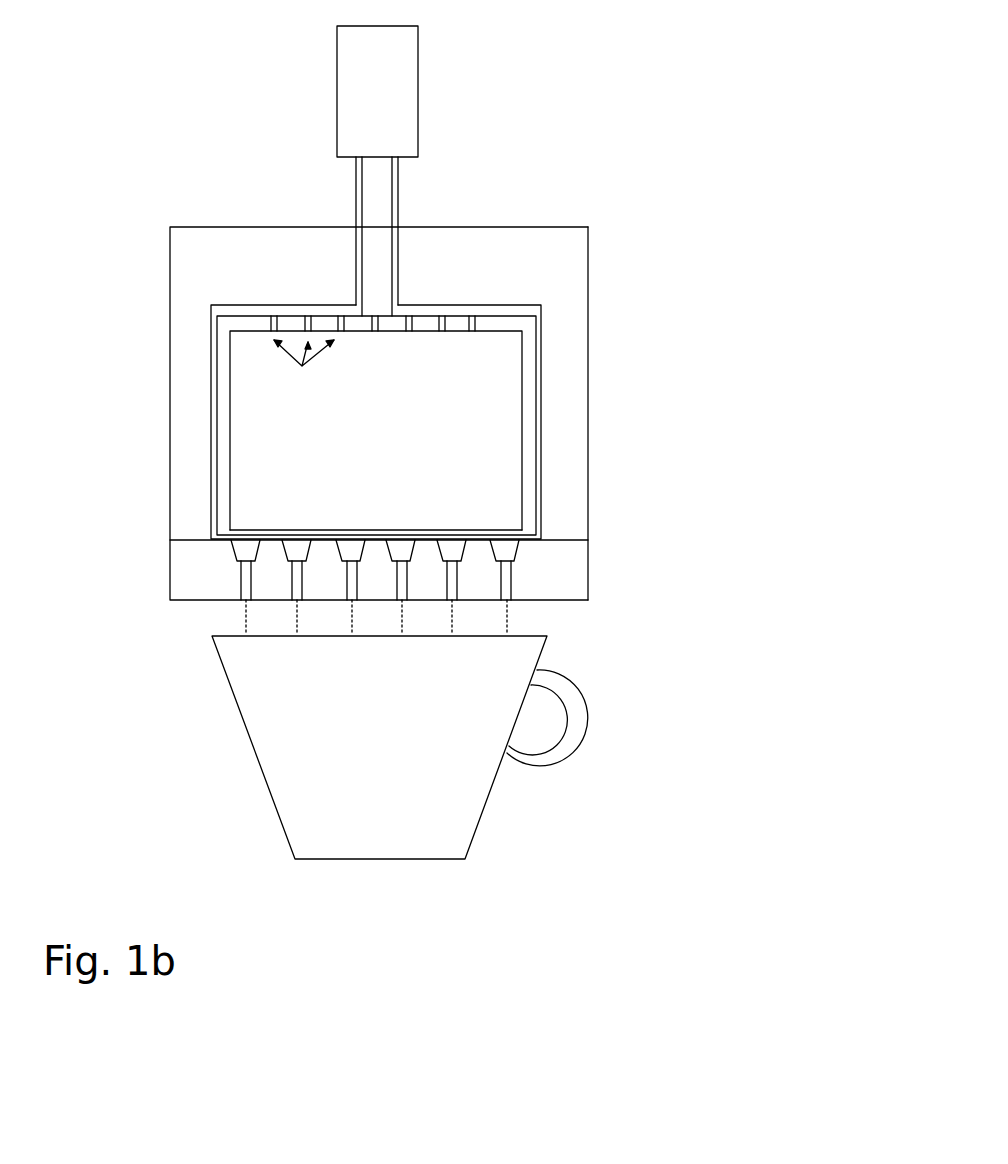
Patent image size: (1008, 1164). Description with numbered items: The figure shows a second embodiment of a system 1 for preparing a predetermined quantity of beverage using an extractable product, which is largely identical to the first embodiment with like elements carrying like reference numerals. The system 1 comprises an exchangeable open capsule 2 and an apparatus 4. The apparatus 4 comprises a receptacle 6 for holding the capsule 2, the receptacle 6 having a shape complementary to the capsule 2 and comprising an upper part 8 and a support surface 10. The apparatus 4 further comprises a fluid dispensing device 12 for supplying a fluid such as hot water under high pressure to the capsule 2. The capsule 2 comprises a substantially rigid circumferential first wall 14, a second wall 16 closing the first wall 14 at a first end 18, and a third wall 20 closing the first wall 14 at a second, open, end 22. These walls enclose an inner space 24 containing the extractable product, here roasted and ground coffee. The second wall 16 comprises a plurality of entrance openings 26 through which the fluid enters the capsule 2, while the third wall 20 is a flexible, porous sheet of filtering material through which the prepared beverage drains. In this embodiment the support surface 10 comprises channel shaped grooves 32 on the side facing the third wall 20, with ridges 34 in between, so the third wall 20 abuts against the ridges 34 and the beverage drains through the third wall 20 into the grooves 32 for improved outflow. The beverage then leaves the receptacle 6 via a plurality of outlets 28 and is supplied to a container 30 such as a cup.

The system 1 is at (760, 571).
The exchangeable open capsule 2 is at (528, 405).
The apparatus 4 is at (688, 232).
The receptacle 6 is at (588, 362).
The upper part 8 is at (585, 296).
The support surface 10 is at (528, 540).
The fluid dispensing device 12 is at (413, 96).
The circumferential first wall 14 is at (527, 448).
The second wall 16 is at (495, 325).
The first end 18 is at (528, 340).
The third wall 20 is at (480, 533).
The second, open, end 22 is at (527, 520).
The inner space 24 is at (272, 458).
The entrance openings 26 is at (304, 367).
The outlets 28 is at (300, 587).
The container 30 is at (480, 813).
The channel shaped grooves 32 is at (402, 548).
The ridges 34 is at (477, 547).